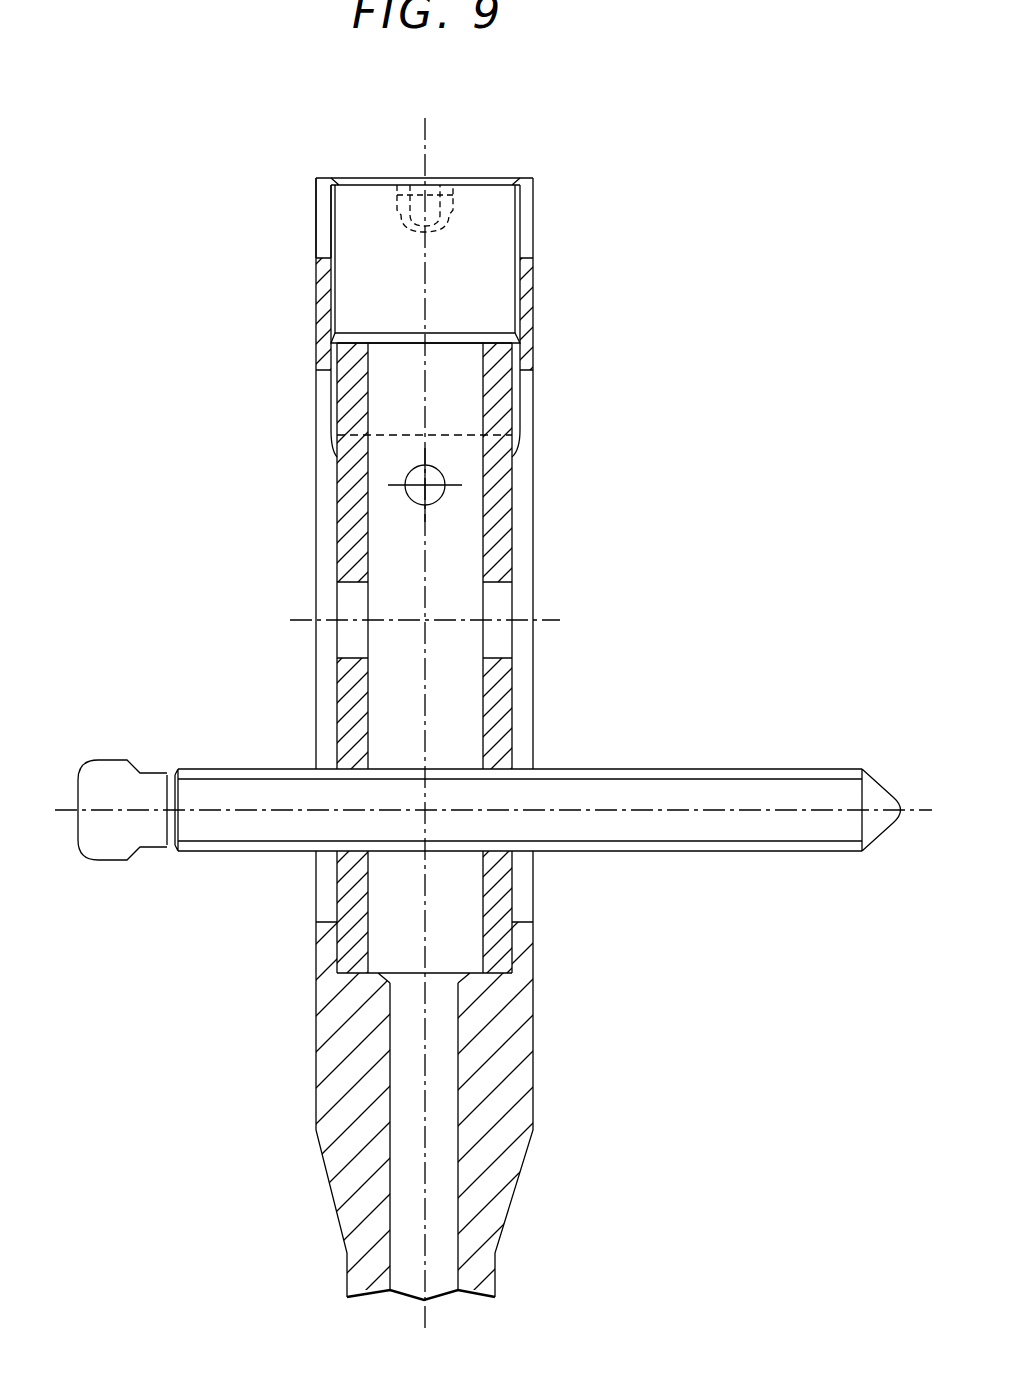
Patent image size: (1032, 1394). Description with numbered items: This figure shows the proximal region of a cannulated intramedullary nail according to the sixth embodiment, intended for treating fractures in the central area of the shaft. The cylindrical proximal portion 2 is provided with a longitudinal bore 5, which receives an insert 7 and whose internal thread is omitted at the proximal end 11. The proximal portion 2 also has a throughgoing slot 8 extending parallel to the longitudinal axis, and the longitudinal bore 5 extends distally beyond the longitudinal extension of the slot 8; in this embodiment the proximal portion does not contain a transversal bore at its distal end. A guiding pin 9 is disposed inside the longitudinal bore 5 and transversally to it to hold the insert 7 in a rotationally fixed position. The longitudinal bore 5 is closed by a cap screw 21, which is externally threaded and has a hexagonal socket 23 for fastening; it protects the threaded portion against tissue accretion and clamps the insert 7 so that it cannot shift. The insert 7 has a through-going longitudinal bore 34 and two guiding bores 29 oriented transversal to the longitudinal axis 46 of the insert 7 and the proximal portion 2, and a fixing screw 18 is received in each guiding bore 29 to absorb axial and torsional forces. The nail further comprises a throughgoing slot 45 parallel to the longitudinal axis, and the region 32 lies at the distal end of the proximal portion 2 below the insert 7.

The proximal portion 2 is at (305, 408).
The longitudinal bore 5 is at (494, 928).
The insert 7 is at (497, 530).
The throughgoing slot 8 is at (325, 598).
The guiding pin 9 is at (445, 476).
The proximal end 11 is at (322, 181).
The fixing screw 18 is at (717, 793).
The cap screw 21 is at (485, 250).
The hexagonal socket 23 is at (448, 195).
The guiding bore 29 is at (497, 658).
The base body 32 is at (352, 975).
The through-going longitudinal bore 34 is at (372, 872).
The throughgoing slot 45 is at (438, 1190).
The longitudinal axis 46 is at (425, 293).